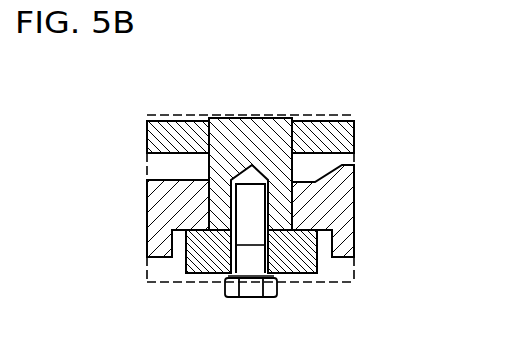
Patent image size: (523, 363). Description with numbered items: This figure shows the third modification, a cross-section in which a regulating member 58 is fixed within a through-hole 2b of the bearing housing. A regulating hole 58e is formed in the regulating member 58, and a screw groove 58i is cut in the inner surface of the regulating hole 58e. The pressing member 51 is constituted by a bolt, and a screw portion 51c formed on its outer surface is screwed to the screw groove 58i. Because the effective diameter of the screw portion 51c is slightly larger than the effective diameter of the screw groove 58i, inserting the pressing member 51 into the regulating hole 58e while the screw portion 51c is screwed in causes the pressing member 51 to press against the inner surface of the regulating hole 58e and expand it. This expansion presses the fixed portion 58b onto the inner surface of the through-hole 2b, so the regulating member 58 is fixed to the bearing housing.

The through-hole 2b is at (213, 182).
The regulating member 58 is at (259, 111).
The fixed portion 58b is at (192, 182).
The regulating hole 58e is at (272, 198).
The screw groove 58i is at (240, 248).
The pressing member 51 is at (249, 298).
The screw portion 51c is at (300, 265).